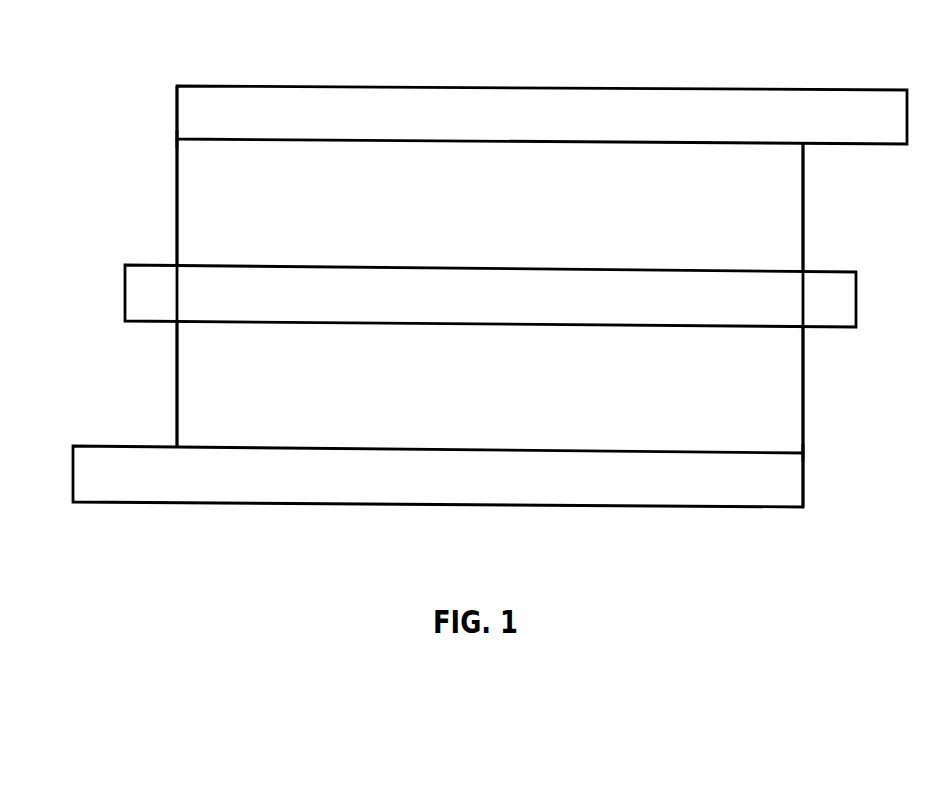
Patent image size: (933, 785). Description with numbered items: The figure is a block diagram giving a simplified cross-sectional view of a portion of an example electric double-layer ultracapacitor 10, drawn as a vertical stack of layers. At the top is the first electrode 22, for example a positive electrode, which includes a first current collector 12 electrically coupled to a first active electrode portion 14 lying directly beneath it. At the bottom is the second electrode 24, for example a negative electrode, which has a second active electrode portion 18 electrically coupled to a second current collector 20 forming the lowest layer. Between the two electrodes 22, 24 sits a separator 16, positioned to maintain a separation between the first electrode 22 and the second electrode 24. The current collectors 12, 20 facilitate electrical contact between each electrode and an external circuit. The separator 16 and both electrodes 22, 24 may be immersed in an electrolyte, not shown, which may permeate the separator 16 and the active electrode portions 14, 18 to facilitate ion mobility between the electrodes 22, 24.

The electric double-layer ultracapacitor 10 is at (165, 50).
The first current collector 12 is at (464, 127).
The first active electrode portion 14 is at (389, 217).
The separator 16 is at (490, 296).
The second active electrode portion 18 is at (389, 389).
The second current collector 20 is at (357, 487).
The first electrode 22 is at (170, 134).
The second electrode 24 is at (812, 458).